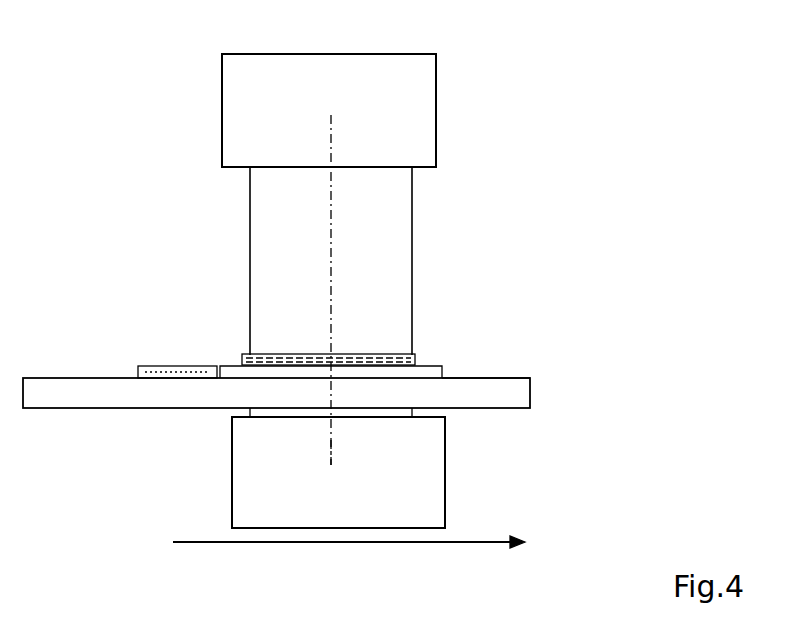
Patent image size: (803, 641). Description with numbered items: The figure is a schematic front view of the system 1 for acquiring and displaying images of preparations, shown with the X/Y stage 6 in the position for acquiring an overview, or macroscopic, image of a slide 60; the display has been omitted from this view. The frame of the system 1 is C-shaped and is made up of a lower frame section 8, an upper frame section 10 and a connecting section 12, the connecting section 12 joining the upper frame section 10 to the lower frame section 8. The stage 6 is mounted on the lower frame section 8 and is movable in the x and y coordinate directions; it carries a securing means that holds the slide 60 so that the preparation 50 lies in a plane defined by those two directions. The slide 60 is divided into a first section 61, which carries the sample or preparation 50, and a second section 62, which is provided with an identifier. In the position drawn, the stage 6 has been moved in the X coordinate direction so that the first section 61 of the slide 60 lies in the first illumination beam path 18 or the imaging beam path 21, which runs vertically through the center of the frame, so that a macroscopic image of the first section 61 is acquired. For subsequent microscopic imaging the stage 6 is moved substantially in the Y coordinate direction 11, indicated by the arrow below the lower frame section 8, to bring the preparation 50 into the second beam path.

The system 1 is at (145, 130).
The upper frame section 10 is at (222, 79).
The connecting section 12 is at (400, 236).
The imaging beam path 21 is at (333, 138).
The preparation 50 is at (322, 353).
The first section 61 is at (431, 366).
The second section 62 is at (163, 364).
The slide 60 is at (434, 371).
The stage 6 is at (55, 409).
The lower frame section 8 is at (232, 459).
The first illumination beam path 18 is at (333, 448).
The Y coordinate direction 11 is at (455, 545).